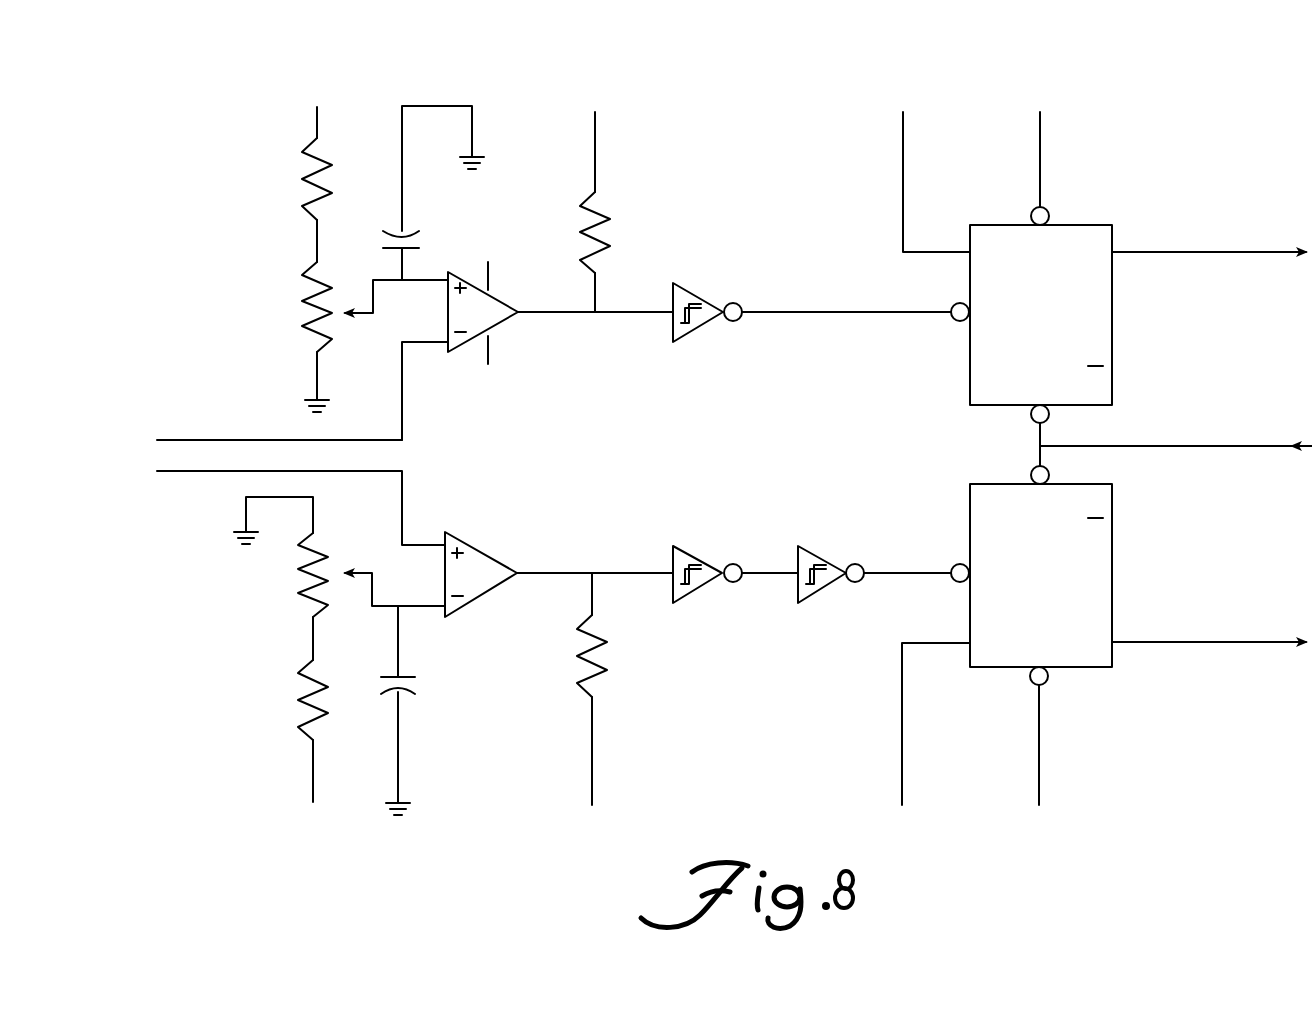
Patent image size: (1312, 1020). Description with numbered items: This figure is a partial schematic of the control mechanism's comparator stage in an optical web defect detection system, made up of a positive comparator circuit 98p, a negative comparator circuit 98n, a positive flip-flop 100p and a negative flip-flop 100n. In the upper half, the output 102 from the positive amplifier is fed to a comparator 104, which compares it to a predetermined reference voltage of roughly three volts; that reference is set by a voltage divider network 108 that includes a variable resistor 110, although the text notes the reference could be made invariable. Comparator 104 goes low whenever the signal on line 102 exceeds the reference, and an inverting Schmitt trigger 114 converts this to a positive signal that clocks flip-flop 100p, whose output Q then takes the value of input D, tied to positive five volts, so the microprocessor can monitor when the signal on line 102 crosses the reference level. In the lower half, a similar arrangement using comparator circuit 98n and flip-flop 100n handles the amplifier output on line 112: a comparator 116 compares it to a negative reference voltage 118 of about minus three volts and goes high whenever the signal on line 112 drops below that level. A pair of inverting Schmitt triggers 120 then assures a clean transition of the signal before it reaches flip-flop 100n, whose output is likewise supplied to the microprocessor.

The positive comparator circuit 98p is at (370, 108).
The negative comparator circuit 98n is at (404, 842).
The positive flip-flop 100p is at (1112, 298).
The negative flip-flop 100n is at (1112, 568).
The output from the positive amplifier 102 is at (236, 404).
The comparator 104 is at (520, 316).
The voltage divider network 108 is at (280, 252).
The variable resistor 110 is at (317, 350).
The output line of the negative amplifier 112 is at (216, 471).
The inverting Schmitt trigger 114 is at (703, 326).
The comparator 116 is at (491, 556).
The negative reference voltage 118 is at (420, 572).
The pair of inverting Schmitt triggers 120 is at (697, 554).